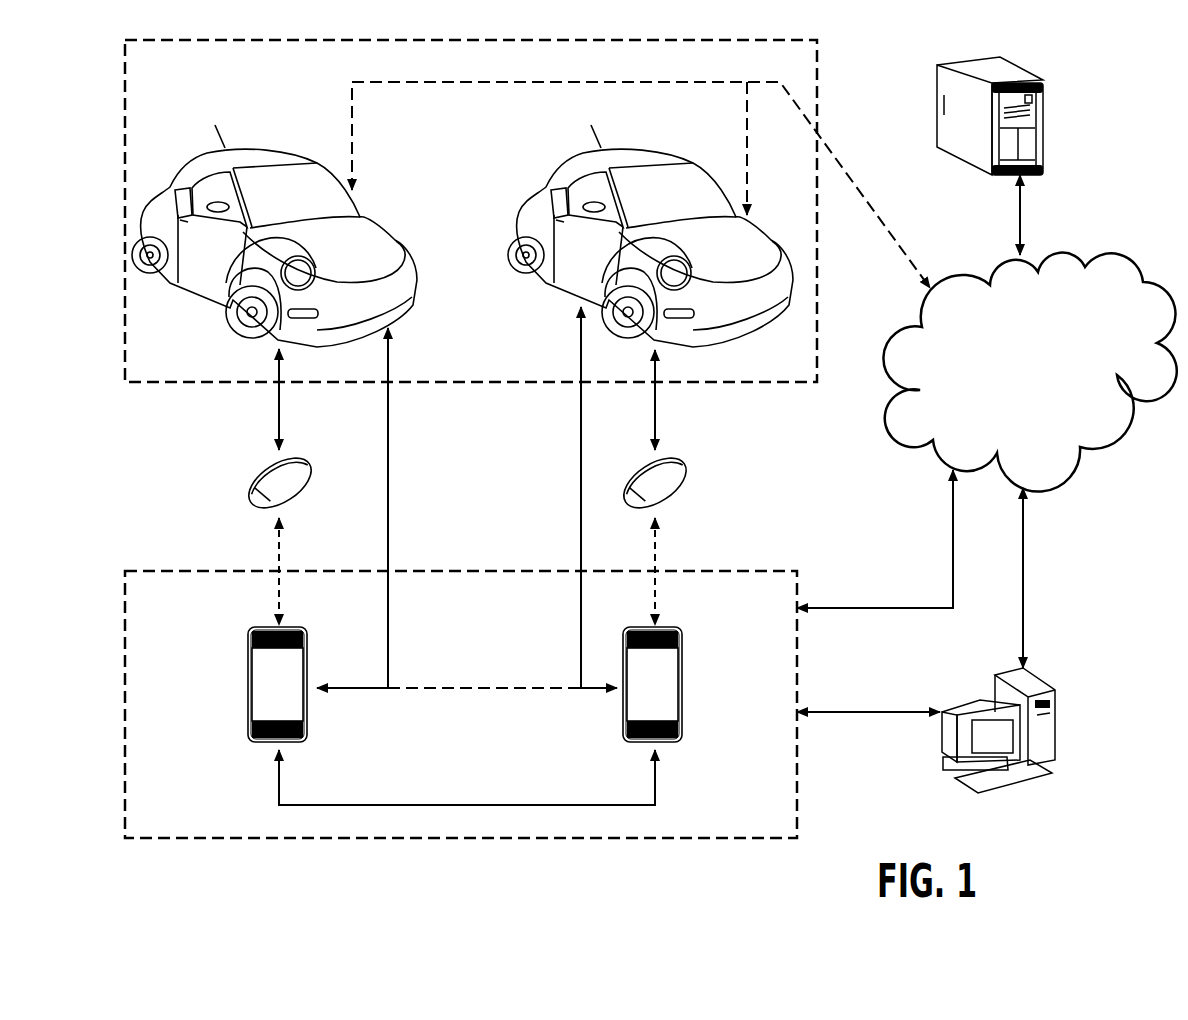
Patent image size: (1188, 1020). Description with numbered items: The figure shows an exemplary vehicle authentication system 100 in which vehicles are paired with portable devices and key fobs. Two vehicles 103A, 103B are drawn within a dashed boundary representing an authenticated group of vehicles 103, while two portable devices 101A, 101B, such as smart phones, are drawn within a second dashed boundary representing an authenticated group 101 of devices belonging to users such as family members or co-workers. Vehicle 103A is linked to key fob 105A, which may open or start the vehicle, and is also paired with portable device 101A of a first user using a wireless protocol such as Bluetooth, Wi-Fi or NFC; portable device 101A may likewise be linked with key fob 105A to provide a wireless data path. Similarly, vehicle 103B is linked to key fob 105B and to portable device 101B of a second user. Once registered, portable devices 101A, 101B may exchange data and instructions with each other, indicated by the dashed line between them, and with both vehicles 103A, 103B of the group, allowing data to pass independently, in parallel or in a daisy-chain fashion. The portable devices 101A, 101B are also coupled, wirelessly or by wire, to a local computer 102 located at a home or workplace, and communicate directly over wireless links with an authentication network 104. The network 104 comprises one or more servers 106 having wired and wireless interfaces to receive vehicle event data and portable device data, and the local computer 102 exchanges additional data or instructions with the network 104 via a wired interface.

The vehicle authentication system 100 is at (162, 443).
The authenticated group of portable devices 101 is at (183, 617).
The portable device 101A is at (236, 684).
The portable device 101B is at (685, 684).
The local computer 102 is at (1025, 730).
The authenticated group of vehicles 103 is at (180, 75).
The vehicle 103A is at (274, 226).
The vehicle 103B is at (650, 226).
The authentication network 104 is at (1045, 380).
The key fob 105A is at (255, 483).
The key fob 105B is at (682, 483).
The server 106 is at (1012, 116).